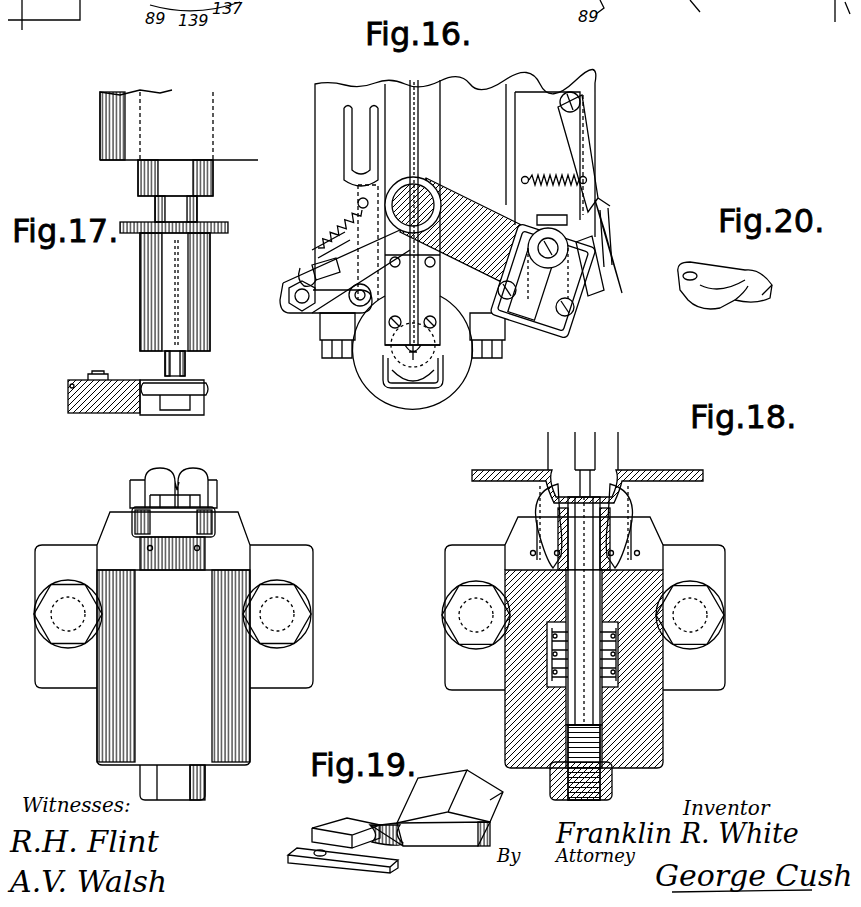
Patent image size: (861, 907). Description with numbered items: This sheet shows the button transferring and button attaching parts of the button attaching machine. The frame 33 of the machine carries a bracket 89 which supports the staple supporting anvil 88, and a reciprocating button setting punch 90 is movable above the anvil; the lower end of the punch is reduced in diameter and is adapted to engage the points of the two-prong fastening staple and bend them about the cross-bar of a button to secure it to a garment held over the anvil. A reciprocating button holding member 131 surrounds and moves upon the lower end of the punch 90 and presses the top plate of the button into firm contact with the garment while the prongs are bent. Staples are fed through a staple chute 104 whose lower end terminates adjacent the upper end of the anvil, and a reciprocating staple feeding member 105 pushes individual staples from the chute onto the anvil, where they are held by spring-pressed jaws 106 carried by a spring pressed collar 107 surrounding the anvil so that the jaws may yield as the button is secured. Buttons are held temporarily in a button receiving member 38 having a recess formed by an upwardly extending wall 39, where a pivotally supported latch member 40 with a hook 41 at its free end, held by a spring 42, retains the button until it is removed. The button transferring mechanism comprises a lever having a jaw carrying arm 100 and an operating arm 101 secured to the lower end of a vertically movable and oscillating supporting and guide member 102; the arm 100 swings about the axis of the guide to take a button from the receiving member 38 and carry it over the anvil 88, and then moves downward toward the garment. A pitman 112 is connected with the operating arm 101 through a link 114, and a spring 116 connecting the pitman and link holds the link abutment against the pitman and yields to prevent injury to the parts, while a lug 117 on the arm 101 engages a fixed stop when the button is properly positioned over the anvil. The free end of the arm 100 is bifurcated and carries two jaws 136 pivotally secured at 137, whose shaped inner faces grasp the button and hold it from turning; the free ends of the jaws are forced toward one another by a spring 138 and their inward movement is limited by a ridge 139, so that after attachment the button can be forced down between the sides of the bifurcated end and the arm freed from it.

In FIG. 16, the frame 33 is at (455, 207).
In FIG. 17, the frame 33 is at (250, 152).
In FIG. 16, the button receiving member 38 is at (598, 200).
In FIG. 16, the upwardly extending wall 39 is at (552, 215).
In FIG. 16, the latch member 40 is at (590, 153).
In FIG. 16, the hook 41 is at (600, 258).
In FIG. 16, the spring 42 is at (554, 178).
In FIG. 17, the staple supporting anvil 88 is at (180, 487).
In FIG. 18, the staple supporting anvil 88 is at (583, 618).
In FIG. 16, the bracket 89 is at (415, 404).
In FIG. 17, the bracket 89 is at (118, 681).
In FIG. 18, the bracket 89 is at (530, 684).
In FIG. 17, the button setting punch 90 is at (197, 207).
In FIG. 18, the button setting punch 90 is at (582, 445).
In FIG. 16, the jaw carrying arm 100 is at (508, 200).
In FIG. 17, the jaw carrying arm 100 is at (80, 410).
In FIG. 19, the jaw carrying arm 100 is at (462, 795).
In FIG. 16, the operating arm 101 is at (335, 244).
In FIG. 16, the supporting and guide member 102 is at (437, 186).
In FIG. 16, the staple chute 104 is at (424, 138).
In FIG. 16, the staple feeding member 105 is at (425, 294).
In FIG. 16, the spring-pressed jaws 106 is at (420, 352).
In FIG. 17, the spring-pressed jaws 106 is at (165, 470).
In FIG. 18, the spring-pressed jaws 106 is at (538, 495).
In FIG. 16, the spring pressed collar 107 is at (445, 378).
In FIG. 17, the spring pressed collar 107 is at (200, 562).
In FIG. 18, the spring pressed collar 107 is at (620, 571).
In FIG. 16, the pitman 112 is at (352, 185).
In FIG. 16, the link 114 is at (330, 306).
In FIG. 16, the spring 116 is at (335, 218).
In FIG. 16, the lug 117 is at (310, 270).
In FIG. 17, the button holding member 131 is at (160, 297).
In FIG. 18, the button holding member 131 is at (604, 458).
In FIG. 16, the jaws 136 is at (570, 278).
In FIG. 17, the jaws 136 is at (198, 386).
In FIG. 18, the jaws 136 is at (587, 486).
In FIG. 20, the jaws 136 is at (746, 258).
In FIG. 16, the pivot 137 is at (562, 304).
In FIG. 17, the pivot 137 is at (102, 374).
In FIG. 16, the spring 138 is at (583, 300).
In FIG. 16, the ridge 139 is at (537, 320).
In FIG. 19, the ridge 139 is at (362, 815).